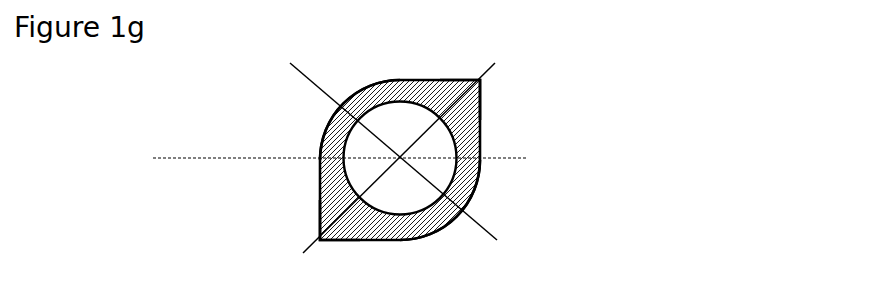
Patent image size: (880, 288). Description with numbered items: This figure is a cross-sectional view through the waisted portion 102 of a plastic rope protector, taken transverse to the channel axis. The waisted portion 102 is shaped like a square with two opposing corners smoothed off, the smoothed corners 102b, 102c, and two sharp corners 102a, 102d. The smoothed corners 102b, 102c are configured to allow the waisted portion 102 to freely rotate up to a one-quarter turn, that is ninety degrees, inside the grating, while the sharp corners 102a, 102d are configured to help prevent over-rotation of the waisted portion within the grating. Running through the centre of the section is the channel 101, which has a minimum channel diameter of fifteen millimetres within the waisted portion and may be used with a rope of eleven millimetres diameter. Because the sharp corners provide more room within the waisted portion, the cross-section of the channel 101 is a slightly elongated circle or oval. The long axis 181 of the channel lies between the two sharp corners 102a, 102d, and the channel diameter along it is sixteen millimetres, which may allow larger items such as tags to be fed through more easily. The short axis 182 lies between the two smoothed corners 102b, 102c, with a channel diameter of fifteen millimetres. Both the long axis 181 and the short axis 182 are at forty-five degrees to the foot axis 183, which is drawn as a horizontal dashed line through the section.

The channel 101 is at (433, 172).
The waisted portion 102 is at (480, 138).
The sharp corner 102a is at (480, 98).
The smoothed corner 102b is at (465, 197).
The smoothed corner 102c is at (327, 128).
The sharp corner 102d is at (320, 228).
The long axis 181 is at (306, 249).
The short axis 182 is at (498, 238).
The foot axis 183 is at (197, 158).